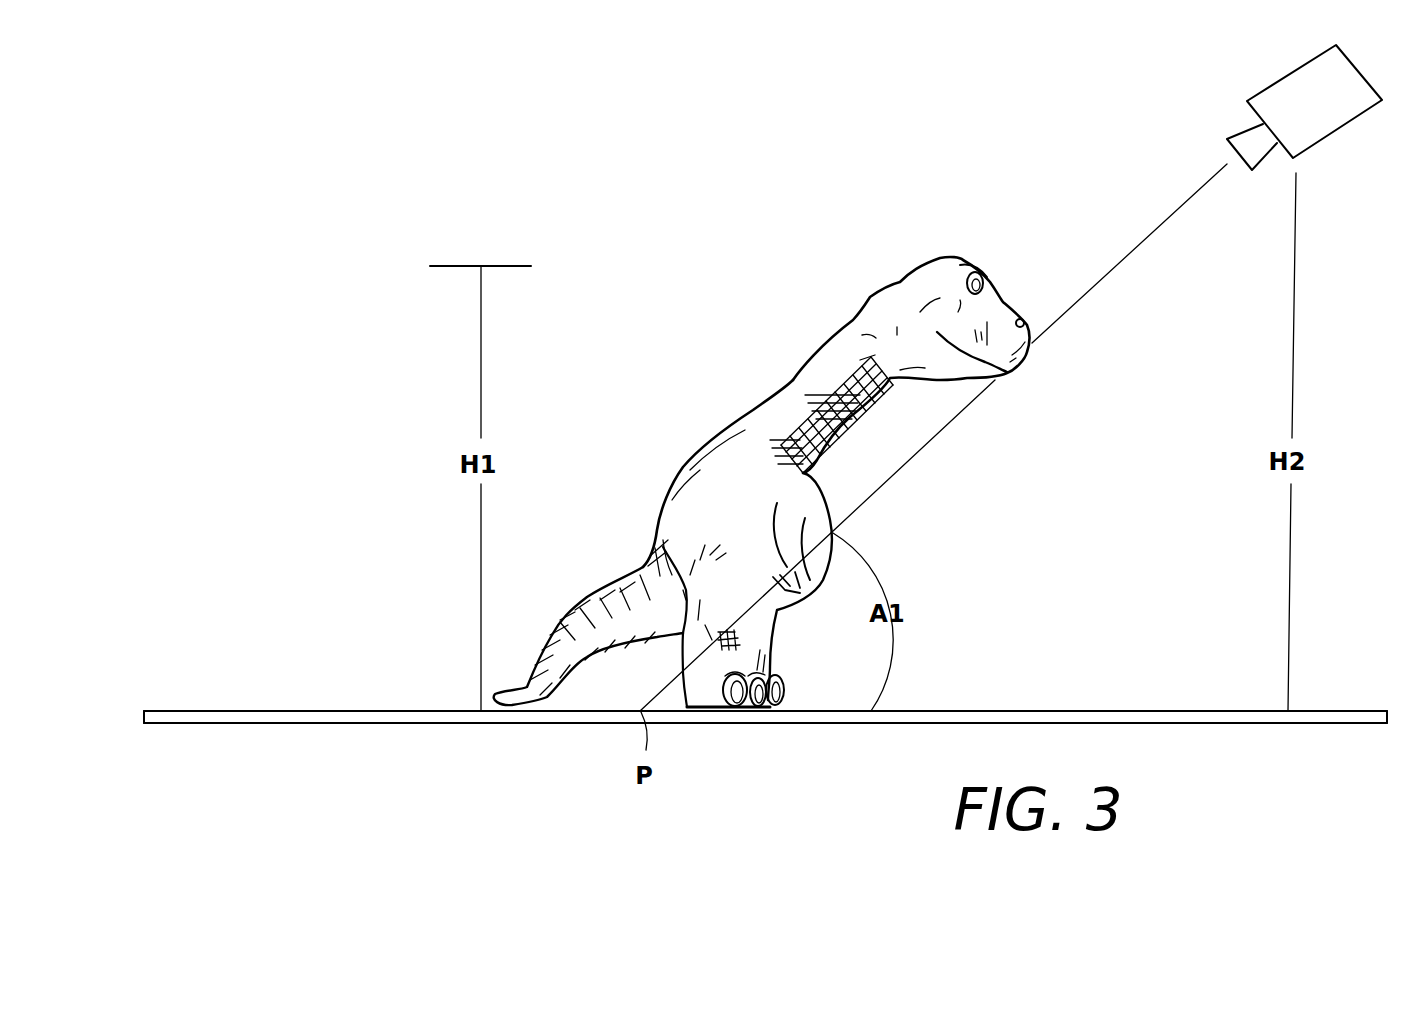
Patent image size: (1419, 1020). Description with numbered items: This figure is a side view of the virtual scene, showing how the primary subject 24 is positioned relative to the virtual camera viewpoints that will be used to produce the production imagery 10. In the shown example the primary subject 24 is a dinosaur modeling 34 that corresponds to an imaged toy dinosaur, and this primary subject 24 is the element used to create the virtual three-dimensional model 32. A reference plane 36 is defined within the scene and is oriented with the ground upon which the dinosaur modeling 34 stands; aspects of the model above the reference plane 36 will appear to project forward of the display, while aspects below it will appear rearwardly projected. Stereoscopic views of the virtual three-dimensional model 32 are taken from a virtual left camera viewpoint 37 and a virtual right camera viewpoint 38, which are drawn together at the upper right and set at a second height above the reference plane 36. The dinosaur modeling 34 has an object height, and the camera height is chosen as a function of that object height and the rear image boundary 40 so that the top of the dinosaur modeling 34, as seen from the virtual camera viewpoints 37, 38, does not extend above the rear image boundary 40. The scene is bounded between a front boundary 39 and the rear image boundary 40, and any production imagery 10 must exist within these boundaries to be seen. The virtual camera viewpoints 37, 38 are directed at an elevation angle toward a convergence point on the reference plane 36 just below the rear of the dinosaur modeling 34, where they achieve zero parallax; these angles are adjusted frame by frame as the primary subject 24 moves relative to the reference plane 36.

The production imagery 10 is at (572, 148).
The primary subject 24 is at (762, 482).
The virtual 3D model 32 is at (768, 333).
The dinosaur modeling 34 is at (829, 377).
The reference plane 36 is at (350, 711).
The virtual left camera viewpoint 37 is at (1268, 105).
The virtual right camera viewpoint 38 is at (1285, 78).
The front boundary 39 is at (1387, 716).
The rear image boundary 40 is at (143, 716).